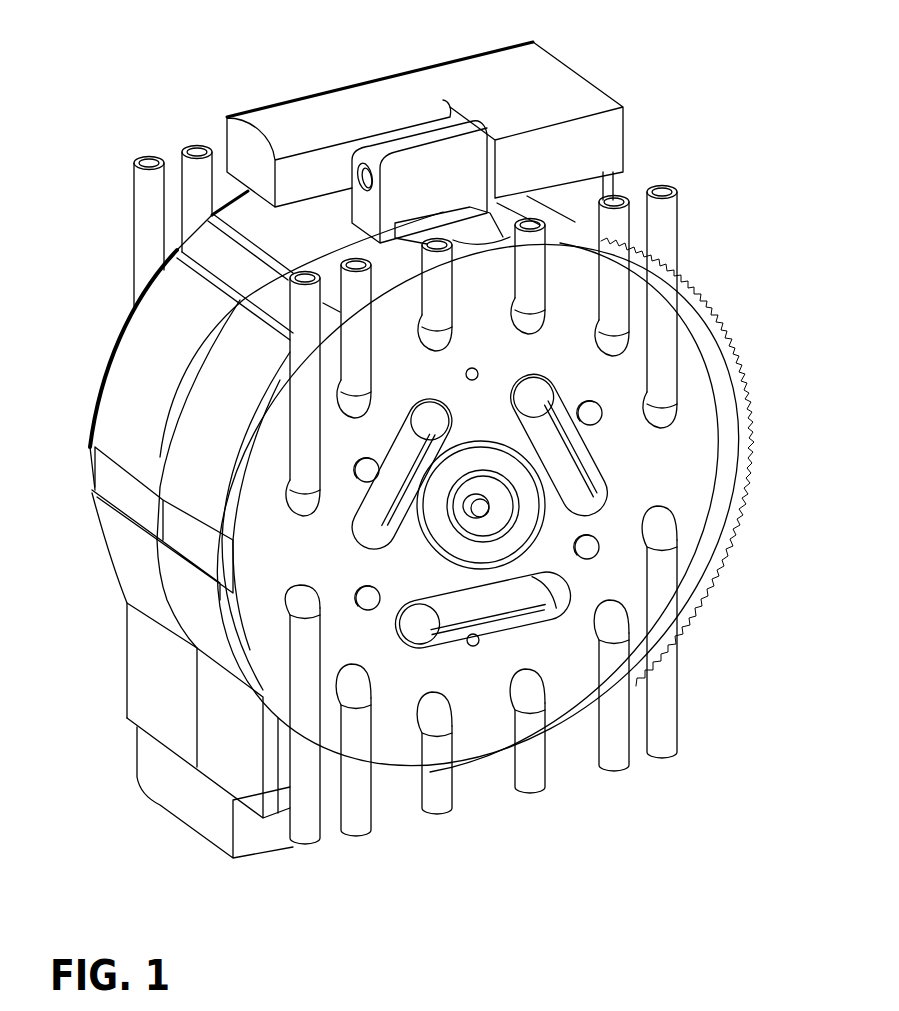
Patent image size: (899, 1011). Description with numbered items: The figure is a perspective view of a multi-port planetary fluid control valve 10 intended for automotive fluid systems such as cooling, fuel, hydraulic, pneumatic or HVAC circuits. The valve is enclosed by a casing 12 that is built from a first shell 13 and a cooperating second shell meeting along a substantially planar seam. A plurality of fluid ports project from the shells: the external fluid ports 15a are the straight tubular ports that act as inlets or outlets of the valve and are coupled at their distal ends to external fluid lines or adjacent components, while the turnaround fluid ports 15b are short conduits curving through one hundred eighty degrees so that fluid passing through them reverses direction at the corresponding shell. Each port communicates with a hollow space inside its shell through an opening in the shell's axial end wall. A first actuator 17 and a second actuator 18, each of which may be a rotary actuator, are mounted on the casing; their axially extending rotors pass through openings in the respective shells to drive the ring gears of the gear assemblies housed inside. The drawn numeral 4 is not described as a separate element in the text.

The multi-port planetary fluid control valve 10 is at (54, 80).
The casing 12 is at (64, 428).
The first shell 13 is at (128, 370).
The rotor disk 4 is at (680, 448).
The external fluid ports 15a is at (197, 150).
The turnaround fluid ports 15b is at (525, 595).
The first actuator 17 is at (202, 815).
The second actuator 18 is at (555, 80).